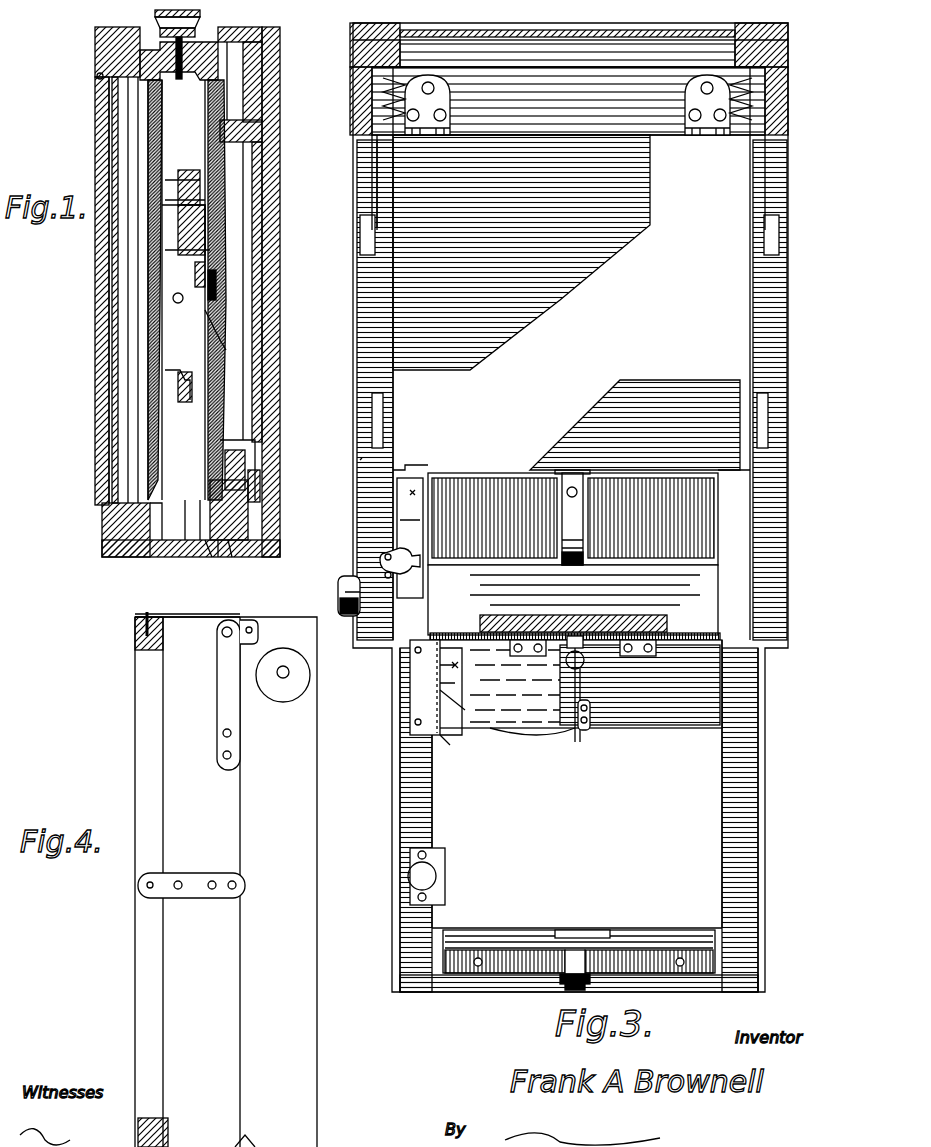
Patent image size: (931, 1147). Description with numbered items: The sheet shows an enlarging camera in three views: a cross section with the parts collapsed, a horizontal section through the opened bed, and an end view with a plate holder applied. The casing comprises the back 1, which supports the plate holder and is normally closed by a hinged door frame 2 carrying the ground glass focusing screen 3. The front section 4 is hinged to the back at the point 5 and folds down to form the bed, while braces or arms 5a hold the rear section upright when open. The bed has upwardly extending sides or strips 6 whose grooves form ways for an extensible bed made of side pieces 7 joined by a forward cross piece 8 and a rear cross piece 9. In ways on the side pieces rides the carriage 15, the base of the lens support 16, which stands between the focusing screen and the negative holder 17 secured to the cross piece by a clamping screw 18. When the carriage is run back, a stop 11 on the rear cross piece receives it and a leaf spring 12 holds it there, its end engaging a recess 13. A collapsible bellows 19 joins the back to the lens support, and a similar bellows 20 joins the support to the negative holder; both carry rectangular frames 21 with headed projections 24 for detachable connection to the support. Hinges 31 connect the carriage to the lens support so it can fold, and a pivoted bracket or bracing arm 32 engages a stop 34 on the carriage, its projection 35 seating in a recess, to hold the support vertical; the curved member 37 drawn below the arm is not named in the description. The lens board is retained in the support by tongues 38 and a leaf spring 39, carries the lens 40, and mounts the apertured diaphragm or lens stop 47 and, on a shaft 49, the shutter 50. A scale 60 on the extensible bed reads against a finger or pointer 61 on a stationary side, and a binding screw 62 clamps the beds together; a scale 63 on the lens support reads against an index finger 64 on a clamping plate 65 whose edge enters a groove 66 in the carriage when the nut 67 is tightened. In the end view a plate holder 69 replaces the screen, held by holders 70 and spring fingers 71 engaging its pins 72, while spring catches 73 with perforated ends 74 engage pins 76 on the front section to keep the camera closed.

In FIG. 1, the back 1 is at (148, 30).
In FIG. 3, the back 1 is at (755, 48).
In FIG. 4, the back 1 is at (196, 882).
In FIG. 1, the hinged door frame 2 is at (99, 72).
In FIG. 3, the hinged door frame 2 is at (385, 34).
In FIG. 1, the ground glass focusing screen 3 is at (108, 150).
In FIG. 3, the ground glass focusing screen 3 is at (640, 34).
In FIG. 1, the front section 4 is at (283, 68).
In FIG. 3, the front section 4 is at (571, 302).
In FIG. 4, the front section 4 is at (279, 800).
In FIG. 1, the hinge point 5 is at (210, 561).
In FIG. 3, the hinge point 5 is at (440, 136).
In FIG. 3, the braces or arms 5a is at (380, 175).
In FIG. 3, the sides or strips 6 is at (780, 278).
In FIG. 3, the side pieces 7 is at (738, 808).
In FIG. 3, the cross piece 8 is at (470, 985).
In FIG. 1, the cross piece 9 is at (268, 557).
In FIG. 3, the cross piece 9 is at (573, 554).
In FIG. 1, the stop 11 is at (224, 569).
In FIG. 3, the stop 11 is at (580, 472).
In FIG. 1, the leaf spring 12 is at (258, 468).
In FIG. 3, the leaf spring 12 is at (575, 508).
In FIG. 3, the recess 13 is at (559, 531).
In FIG. 1, the carriage 15 is at (226, 557).
In FIG. 3, the carriage 15 is at (577, 784).
In FIG. 1, the lens support 16 is at (191, 518).
In FIG. 3, the lens support 16 is at (648, 616).
In FIG. 1, the negative holder 17 is at (260, 488).
In FIG. 3, the negative holder 17 is at (432, 840).
In FIG. 3, the clamping screw 18 is at (563, 985).
In FIG. 1, the collapsible bellows 19 is at (176, 290).
In FIG. 1, the bellows 20 is at (227, 290).
In FIG. 1, the rectangular frames 21 is at (178, 210).
In FIG. 1, the headed projections 24 is at (176, 410).
In FIG. 3, the hinges 31 is at (520, 658).
In FIG. 1, the pivoted bracket or bracing arm 32 is at (179, 511).
In FIG. 3, the pivoted bracket or bracing arm 32 is at (580, 670).
In FIG. 3, the stop 34 is at (575, 708).
In FIG. 3, the projection 35 is at (592, 706).
In FIG. 3, the spring 37 is at (555, 732).
In FIG. 1, the tongues 38 is at (80, 350).
In FIG. 1, the leaf spring 39 is at (189, 174).
In FIG. 1, the lens 40 is at (172, 298).
In FIG. 1, the apertured diaphragm or lens stop 47 is at (216, 295).
In FIG. 1, the shaft 49 is at (231, 331).
In FIG. 1, the shutter 50 is at (206, 270).
In FIG. 3, the scale 60 is at (410, 498).
In FIG. 3, the finger or pointer 61 is at (385, 560).
In FIG. 3, the binding screw 62 is at (355, 616).
In FIG. 4, the binding screw 62 is at (283, 675).
In FIG. 3, the scale 63 is at (458, 685).
In FIG. 3, the index finger 64 is at (465, 710).
In FIG. 3, the clamping plate 65 is at (420, 710).
In FIG. 3, the groove 66 is at (460, 742).
In FIG. 3, the nut 67 is at (420, 687).
In FIG. 4, the plate holder 69 is at (150, 758).
In FIG. 4, the holders 70 is at (170, 1133).
In FIG. 4, the spring fingers 71 is at (175, 614).
In FIG. 4, the pins 72 is at (152, 615).
In FIG. 4, the spring catches 73 is at (218, 697).
In FIG. 4, the perforated ends 74 is at (250, 620).
In FIG. 4, the pins 76 is at (258, 633).